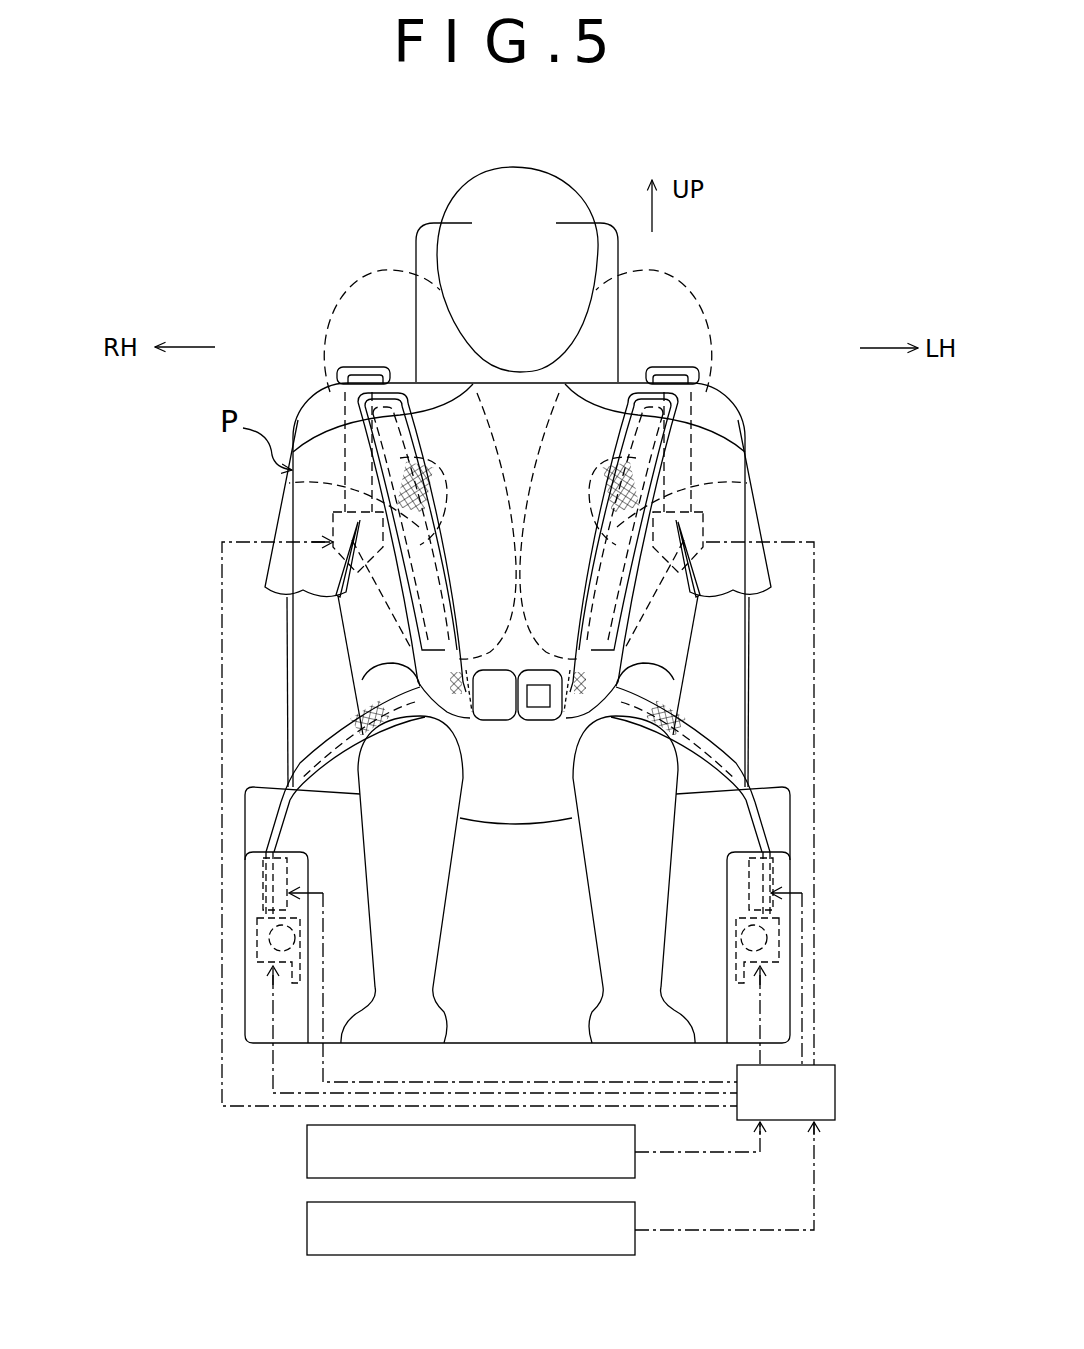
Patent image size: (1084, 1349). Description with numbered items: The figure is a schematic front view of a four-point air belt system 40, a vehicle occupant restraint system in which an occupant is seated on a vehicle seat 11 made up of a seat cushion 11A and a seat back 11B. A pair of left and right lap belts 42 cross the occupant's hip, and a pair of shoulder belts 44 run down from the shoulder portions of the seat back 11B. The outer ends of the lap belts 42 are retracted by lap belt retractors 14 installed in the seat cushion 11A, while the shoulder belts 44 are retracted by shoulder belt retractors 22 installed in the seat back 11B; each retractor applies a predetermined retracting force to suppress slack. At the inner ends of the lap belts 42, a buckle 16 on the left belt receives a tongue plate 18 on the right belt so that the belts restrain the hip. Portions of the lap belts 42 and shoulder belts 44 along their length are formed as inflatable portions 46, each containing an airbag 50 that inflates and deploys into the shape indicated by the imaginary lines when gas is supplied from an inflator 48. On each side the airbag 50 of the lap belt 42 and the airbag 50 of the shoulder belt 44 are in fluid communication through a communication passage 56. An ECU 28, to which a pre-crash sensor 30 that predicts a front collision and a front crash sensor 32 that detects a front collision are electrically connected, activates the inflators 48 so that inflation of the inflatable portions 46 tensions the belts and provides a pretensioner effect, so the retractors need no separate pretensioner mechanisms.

The vehicle seat 11 is at (552, 653).
The seat cushion 11A is at (511, 1046).
The seat back 11B is at (747, 439).
The lap belt retractor 14 is at (256, 935).
The buckle 16 is at (536, 718).
The tongue plate 18 is at (497, 718).
The shoulder belt retractor 22 is at (333, 530).
The ECU 28 is at (827, 1120).
The pre-crash sensor 30 is at (307, 1163).
The front crash sensor 32 is at (307, 1240).
The four-point air belt system 40 is at (828, 470).
The lap belt 42 is at (311, 710).
The shoulder belt 44 is at (442, 510).
The inflatable portion 46 is at (447, 627).
The inflator 48 is at (288, 870).
The airbag 50 is at (436, 590).
The communication passage 56 is at (428, 724).